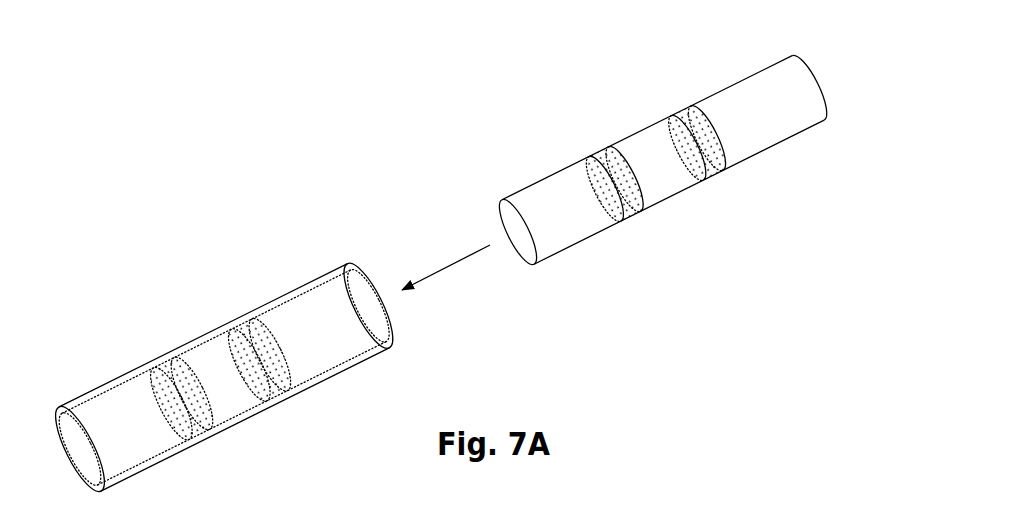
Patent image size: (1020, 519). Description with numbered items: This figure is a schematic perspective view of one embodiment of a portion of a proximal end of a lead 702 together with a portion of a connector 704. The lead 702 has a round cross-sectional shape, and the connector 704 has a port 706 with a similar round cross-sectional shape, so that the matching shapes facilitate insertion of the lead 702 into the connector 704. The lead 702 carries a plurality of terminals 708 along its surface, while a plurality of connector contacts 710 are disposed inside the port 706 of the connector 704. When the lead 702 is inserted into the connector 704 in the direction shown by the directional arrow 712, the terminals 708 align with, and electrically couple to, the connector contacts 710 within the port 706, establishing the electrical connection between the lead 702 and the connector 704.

The lead 702 is at (676, 175).
The connector 704 is at (244, 341).
The port 706 is at (384, 276).
The terminals 708 is at (668, 190).
The connector contacts 710 is at (239, 412).
The directional arrow 712 is at (452, 258).